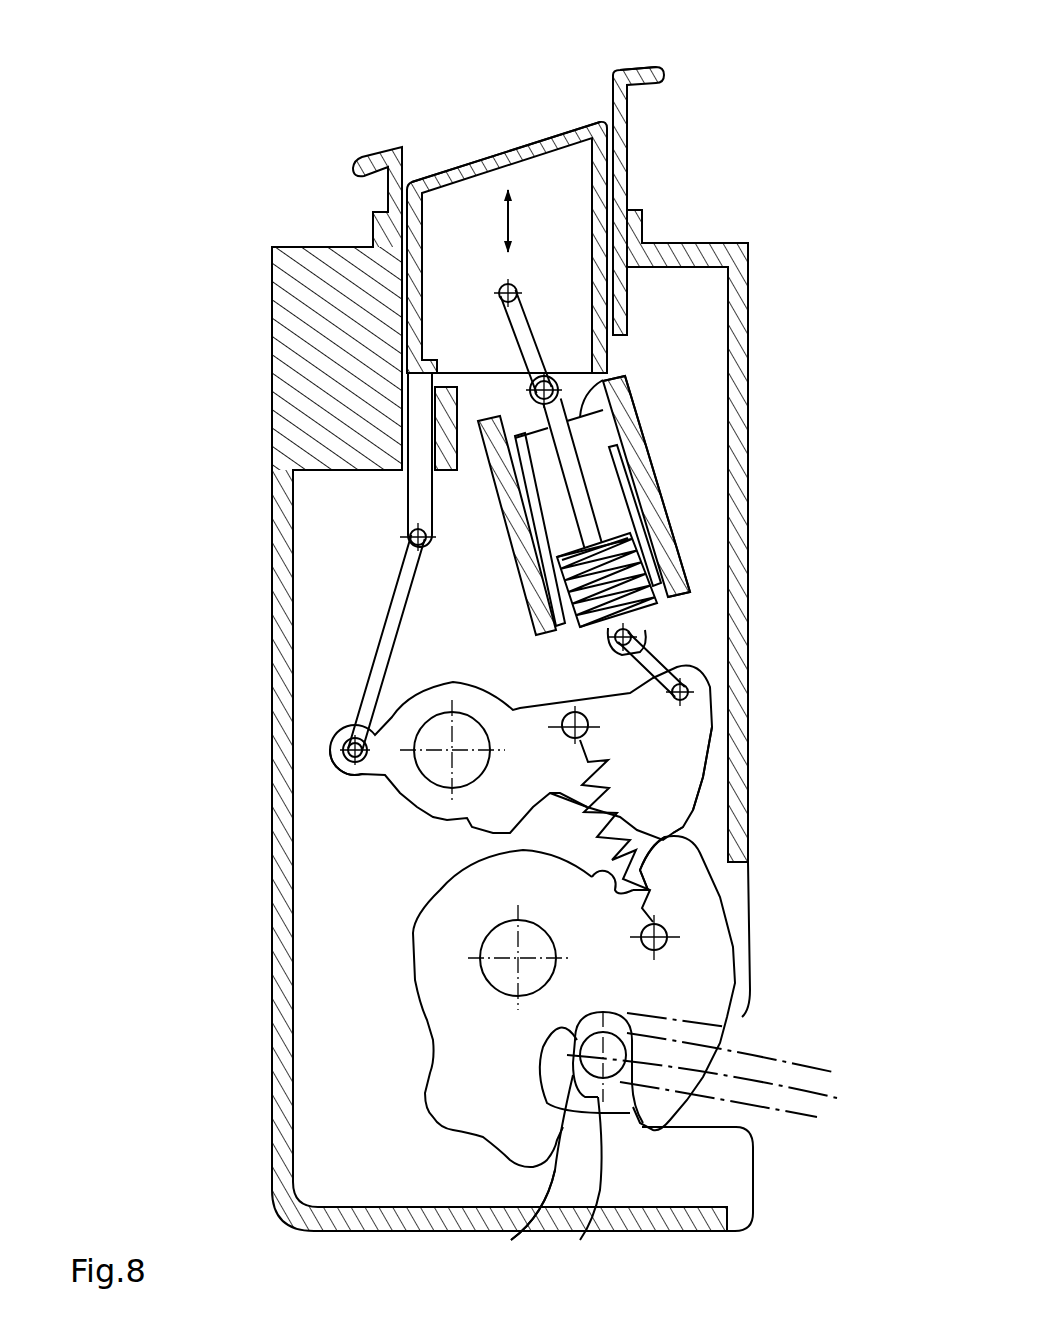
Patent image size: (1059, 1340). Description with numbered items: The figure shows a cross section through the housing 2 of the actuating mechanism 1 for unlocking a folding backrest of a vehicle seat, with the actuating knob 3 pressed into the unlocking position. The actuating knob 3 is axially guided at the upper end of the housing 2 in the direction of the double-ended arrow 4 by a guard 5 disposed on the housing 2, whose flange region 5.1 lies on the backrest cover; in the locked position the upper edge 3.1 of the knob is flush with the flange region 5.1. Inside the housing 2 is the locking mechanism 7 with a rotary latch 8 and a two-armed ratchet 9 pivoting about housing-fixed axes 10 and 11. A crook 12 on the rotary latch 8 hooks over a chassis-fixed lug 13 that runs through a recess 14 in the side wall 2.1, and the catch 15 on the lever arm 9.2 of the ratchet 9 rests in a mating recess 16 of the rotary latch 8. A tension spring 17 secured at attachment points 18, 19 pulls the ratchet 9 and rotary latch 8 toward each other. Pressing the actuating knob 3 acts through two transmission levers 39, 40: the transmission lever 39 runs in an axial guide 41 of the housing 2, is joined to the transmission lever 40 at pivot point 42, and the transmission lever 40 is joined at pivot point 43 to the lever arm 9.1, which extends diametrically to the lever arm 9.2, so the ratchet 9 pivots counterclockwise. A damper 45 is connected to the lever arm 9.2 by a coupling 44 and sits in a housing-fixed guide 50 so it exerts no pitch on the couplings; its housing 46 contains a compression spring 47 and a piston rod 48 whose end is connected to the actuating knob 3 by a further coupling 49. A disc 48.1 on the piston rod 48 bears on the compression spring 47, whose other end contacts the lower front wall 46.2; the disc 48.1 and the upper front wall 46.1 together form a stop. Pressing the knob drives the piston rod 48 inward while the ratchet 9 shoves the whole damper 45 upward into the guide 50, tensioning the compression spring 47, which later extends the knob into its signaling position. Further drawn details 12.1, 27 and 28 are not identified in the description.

The actuating mechanism 1 is at (218, 217).
The housing 2 is at (272, 858).
The side wall 2.1 is at (718, 1178).
The actuating knob 3 is at (577, 190).
The upper edge 3.1 is at (507, 147).
The double-ended arrow 4 is at (505, 222).
The guard 5 is at (627, 130).
The flange region 5.1 is at (638, 63).
The locking mechanism 7 is at (328, 920).
The rotary latch 8 is at (438, 1058).
The ratchet 9 is at (438, 803).
The lever arm 9.1 is at (370, 767).
The lever arm 9.2 is at (607, 710).
The axis 10 is at (498, 973).
The axis 11 is at (433, 762).
The crook 12 is at (580, 1218).
The latch shank 12.1 is at (537, 1205).
The lug 13 is at (627, 1056).
The recess 14 is at (693, 1115).
The catch 15 is at (677, 837).
The recess 16 is at (580, 880).
The tension spring 17 is at (590, 807).
The attachment point 18 is at (550, 717).
The attachment point 19 is at (671, 933).
The cam edge 27 is at (670, 853).
The ratchet edge 28 is at (553, 800).
The transmission lever 39 is at (418, 485).
The transmission lever 40 is at (388, 627).
The axial guide 41 is at (452, 470).
The pivot point 42 is at (405, 537).
The pivot point 43 is at (343, 749).
The coupling 44 is at (653, 663).
The damper 45 is at (608, 490).
The housing 46 is at (613, 447).
The upper front wall 46.1 is at (605, 381).
The lower front wall 46.2 is at (650, 607).
The compression spring 47 is at (655, 582).
The piston rod 48 is at (562, 443).
The disc 48.1 is at (570, 547).
The coupling 49 is at (533, 347).
The guide 50 is at (533, 558).